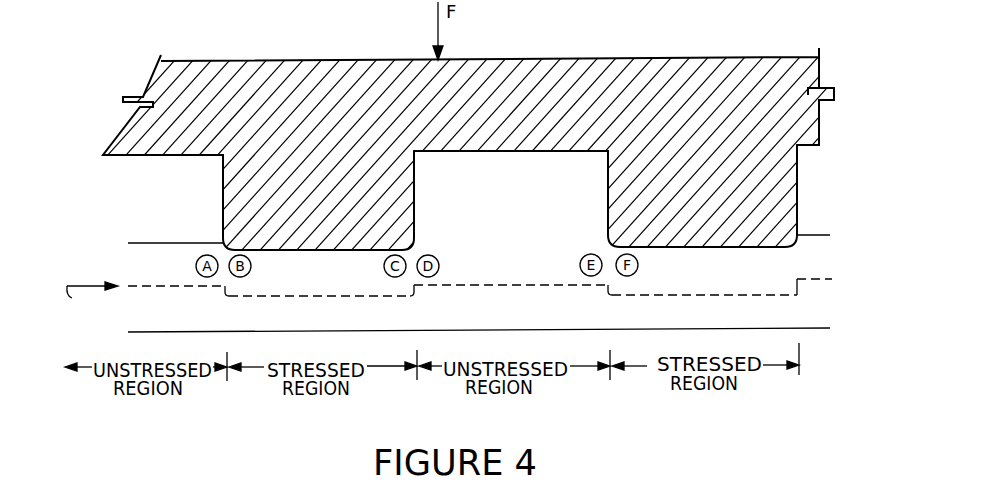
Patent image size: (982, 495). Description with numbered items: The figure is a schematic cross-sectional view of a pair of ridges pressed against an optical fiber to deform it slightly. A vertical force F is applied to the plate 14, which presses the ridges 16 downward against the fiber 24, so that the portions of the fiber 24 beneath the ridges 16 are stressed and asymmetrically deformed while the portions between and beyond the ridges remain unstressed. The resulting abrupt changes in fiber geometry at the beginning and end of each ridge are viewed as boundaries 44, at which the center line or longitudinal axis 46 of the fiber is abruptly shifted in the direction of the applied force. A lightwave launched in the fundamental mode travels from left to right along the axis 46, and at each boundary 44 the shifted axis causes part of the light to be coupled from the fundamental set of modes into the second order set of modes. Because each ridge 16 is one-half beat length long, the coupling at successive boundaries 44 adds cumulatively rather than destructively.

The plate 14 is at (520, 55).
The ridges 16 is at (248, 190).
The fiber 24 is at (132, 236).
The boundaries 44 is at (225, 297).
The fiber axis 46 is at (143, 284).